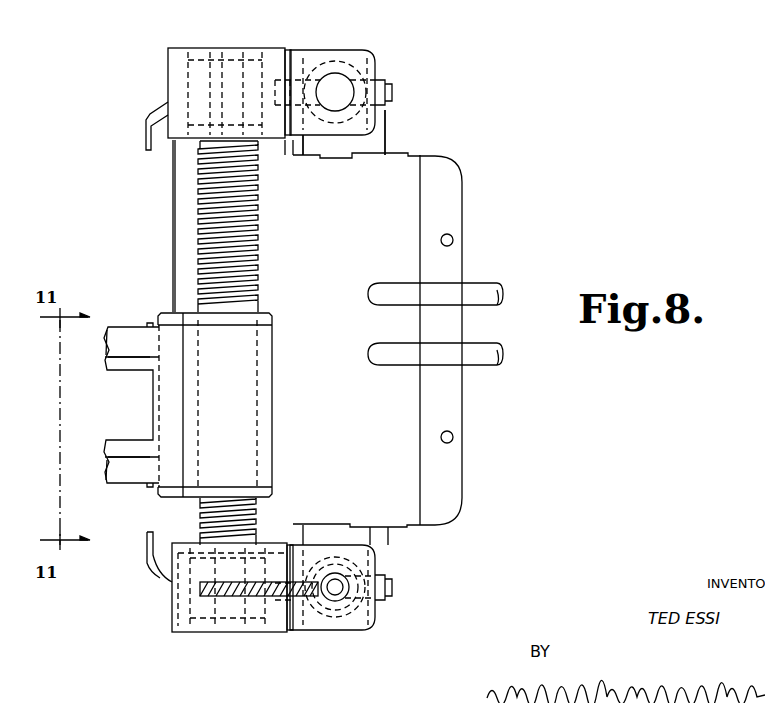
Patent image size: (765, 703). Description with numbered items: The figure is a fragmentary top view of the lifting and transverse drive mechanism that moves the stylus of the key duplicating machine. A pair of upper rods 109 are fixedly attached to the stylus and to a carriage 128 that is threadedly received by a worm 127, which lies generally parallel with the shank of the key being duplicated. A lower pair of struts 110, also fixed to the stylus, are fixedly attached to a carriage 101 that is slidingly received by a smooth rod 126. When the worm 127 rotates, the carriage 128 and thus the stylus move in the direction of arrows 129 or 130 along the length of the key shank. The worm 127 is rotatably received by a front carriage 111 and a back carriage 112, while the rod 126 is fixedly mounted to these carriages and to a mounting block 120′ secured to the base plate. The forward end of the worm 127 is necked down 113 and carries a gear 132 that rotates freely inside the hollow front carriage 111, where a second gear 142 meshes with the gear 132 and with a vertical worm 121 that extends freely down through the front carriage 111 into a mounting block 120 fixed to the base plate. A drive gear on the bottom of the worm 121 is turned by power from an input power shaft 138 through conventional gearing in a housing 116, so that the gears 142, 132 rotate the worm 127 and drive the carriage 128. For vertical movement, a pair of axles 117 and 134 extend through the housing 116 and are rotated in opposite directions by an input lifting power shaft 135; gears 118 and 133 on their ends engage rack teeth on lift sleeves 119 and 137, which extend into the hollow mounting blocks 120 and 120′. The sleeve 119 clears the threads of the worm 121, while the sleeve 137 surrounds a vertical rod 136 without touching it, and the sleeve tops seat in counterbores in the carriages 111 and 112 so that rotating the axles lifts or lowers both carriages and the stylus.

The carriage 101 is at (170, 404).
The upper rods 109 is at (133, 337).
The lower struts 110 is at (122, 370).
The front carriage 111 is at (180, 603).
The back carriage 112 is at (178, 73).
The necked down forward end 113 is at (172, 580).
The housing 116 is at (405, 215).
The axle 117 is at (373, 138).
The gear 118 is at (395, 93).
The lift sleeve 119 is at (332, 620).
The mounting block 120 is at (345, 632).
The mounting block 120′ is at (330, 50).
The worm 121 is at (340, 590).
The smooth rod 126 is at (180, 191).
The worm 127 is at (212, 253).
The carriage 128 is at (245, 417).
The arrow 129 is at (45, 384).
The arrow 130 is at (75, 210).
The gear 132 is at (205, 605).
The gear 133 is at (278, 88).
The axle 134 is at (303, 156).
The input lifting power shaft 135 is at (470, 292).
The vertical rod 136 is at (337, 90).
The lift sleeve 137 is at (352, 56).
The input power shaft 138 is at (490, 352).
The second gear 142 is at (275, 597).